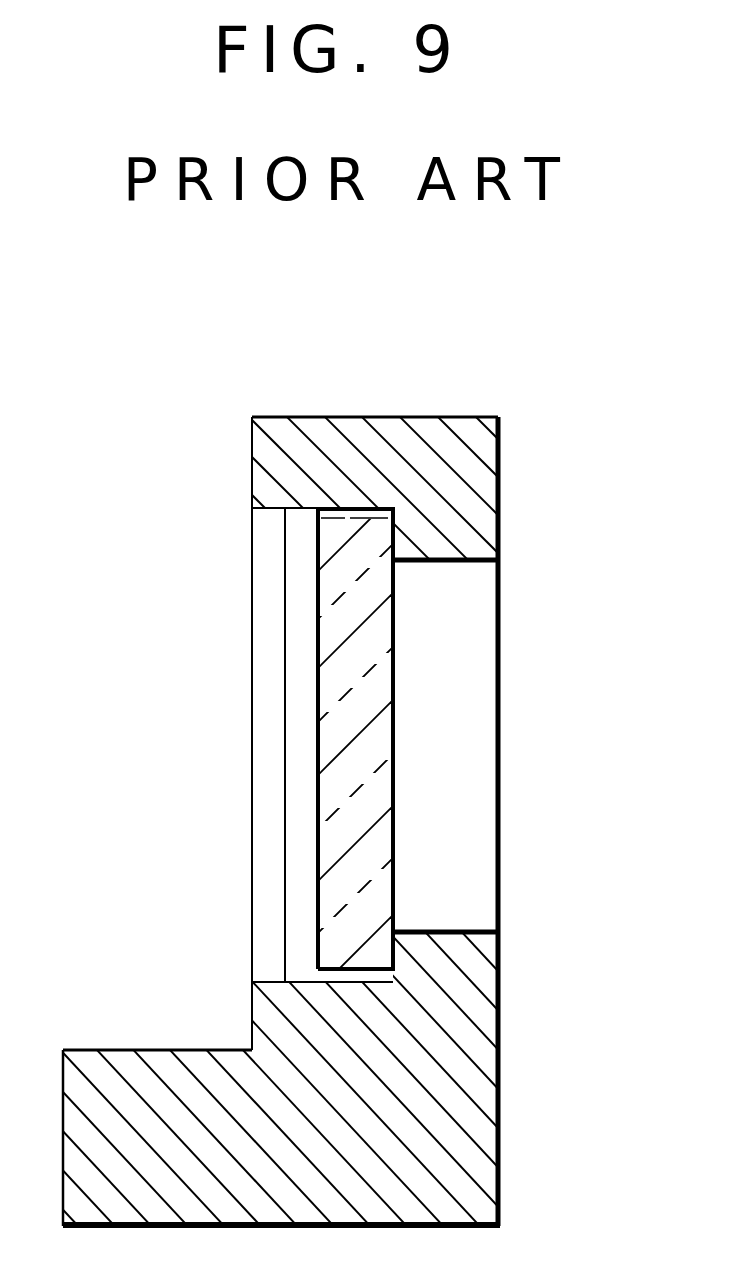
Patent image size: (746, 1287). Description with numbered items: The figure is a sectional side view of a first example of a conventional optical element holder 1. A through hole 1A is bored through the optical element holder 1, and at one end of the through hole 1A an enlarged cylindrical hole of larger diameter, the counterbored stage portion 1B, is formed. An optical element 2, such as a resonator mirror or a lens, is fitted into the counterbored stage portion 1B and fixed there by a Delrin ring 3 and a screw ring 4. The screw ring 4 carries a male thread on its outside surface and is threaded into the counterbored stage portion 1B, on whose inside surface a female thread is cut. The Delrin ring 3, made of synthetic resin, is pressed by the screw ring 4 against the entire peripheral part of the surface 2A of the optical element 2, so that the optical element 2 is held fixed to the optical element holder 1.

The optical element holder 1 is at (457, 417).
The through hole 1A is at (488, 682).
The counterbored stage portion 1B is at (347, 518).
The optical element 2 is at (347, 730).
The surface of the optical element 2A is at (318, 642).
The Delrin ring 3 is at (302, 793).
The screw ring 4 is at (263, 858).